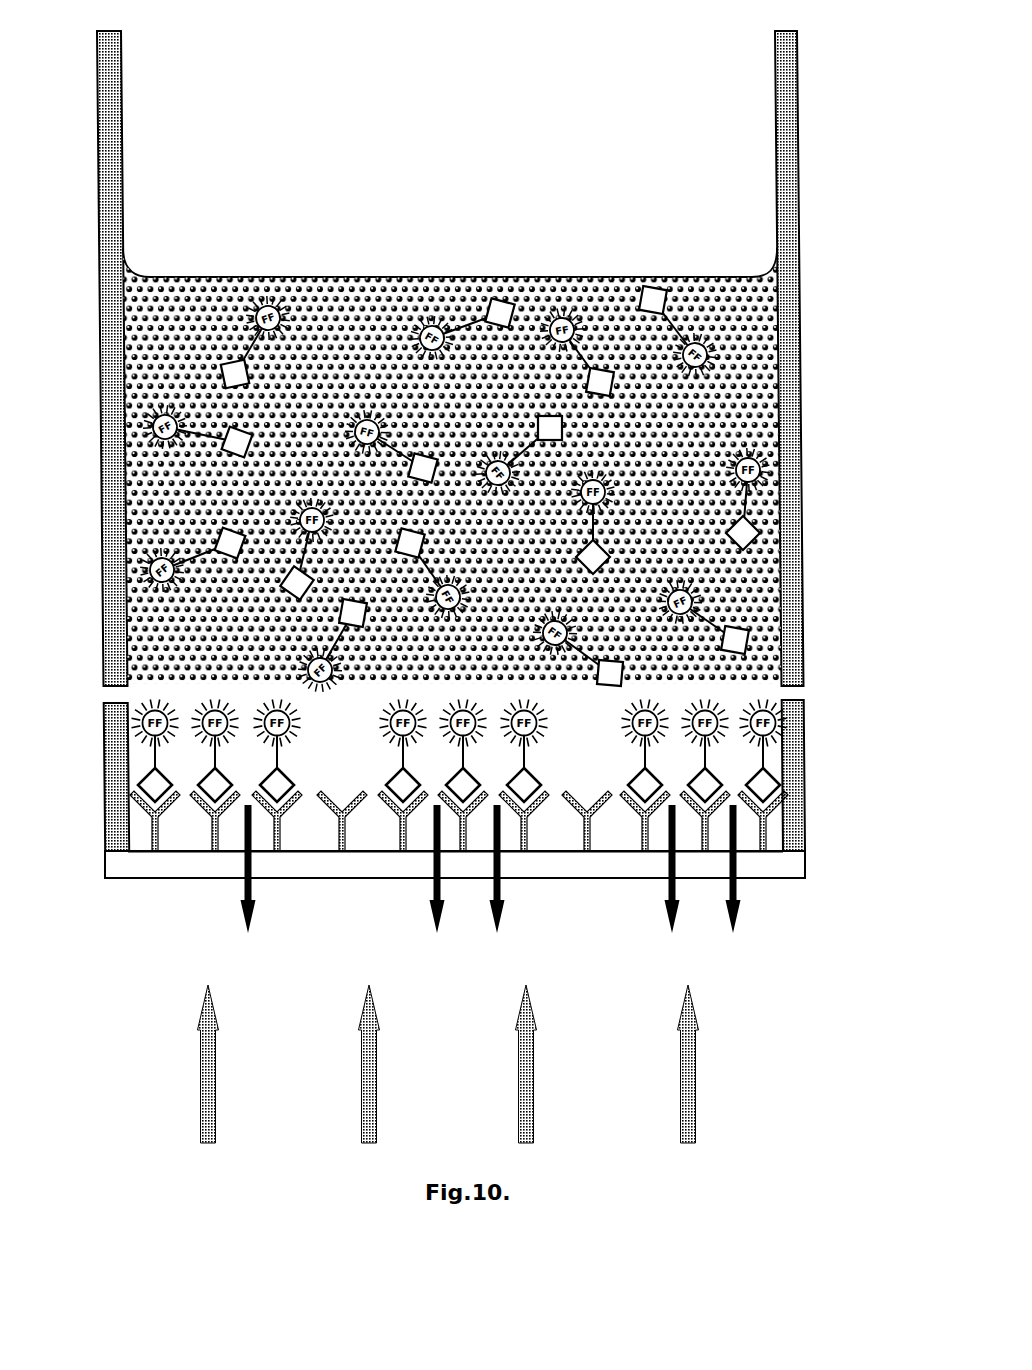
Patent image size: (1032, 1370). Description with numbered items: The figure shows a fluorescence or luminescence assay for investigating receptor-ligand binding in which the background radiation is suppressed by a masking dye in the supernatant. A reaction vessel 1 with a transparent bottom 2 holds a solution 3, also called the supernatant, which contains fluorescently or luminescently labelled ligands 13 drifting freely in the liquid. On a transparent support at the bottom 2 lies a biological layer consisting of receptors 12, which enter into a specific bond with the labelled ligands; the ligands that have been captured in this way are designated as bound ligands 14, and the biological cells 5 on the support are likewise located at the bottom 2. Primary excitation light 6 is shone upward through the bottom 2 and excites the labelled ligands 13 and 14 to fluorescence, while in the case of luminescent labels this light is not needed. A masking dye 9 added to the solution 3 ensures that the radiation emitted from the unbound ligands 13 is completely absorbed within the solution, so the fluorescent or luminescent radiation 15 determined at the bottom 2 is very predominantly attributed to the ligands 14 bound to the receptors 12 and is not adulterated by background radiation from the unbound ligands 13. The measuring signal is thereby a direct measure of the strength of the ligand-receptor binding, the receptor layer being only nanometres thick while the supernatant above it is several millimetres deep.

The reaction vessel 1 is at (786, 226).
The transparent bottom 2 is at (793, 864).
The solution 3 is at (465, 466).
The cells 5 is at (160, 853).
The excitation light 6 is at (200, 1120).
The masking dye 9 is at (193, 653).
The receptors 12 is at (150, 828).
The labelled ligand 13 is at (250, 340).
The bound ligands 14 is at (766, 762).
The fluorescent or luminescent radiation 15 is at (263, 918).